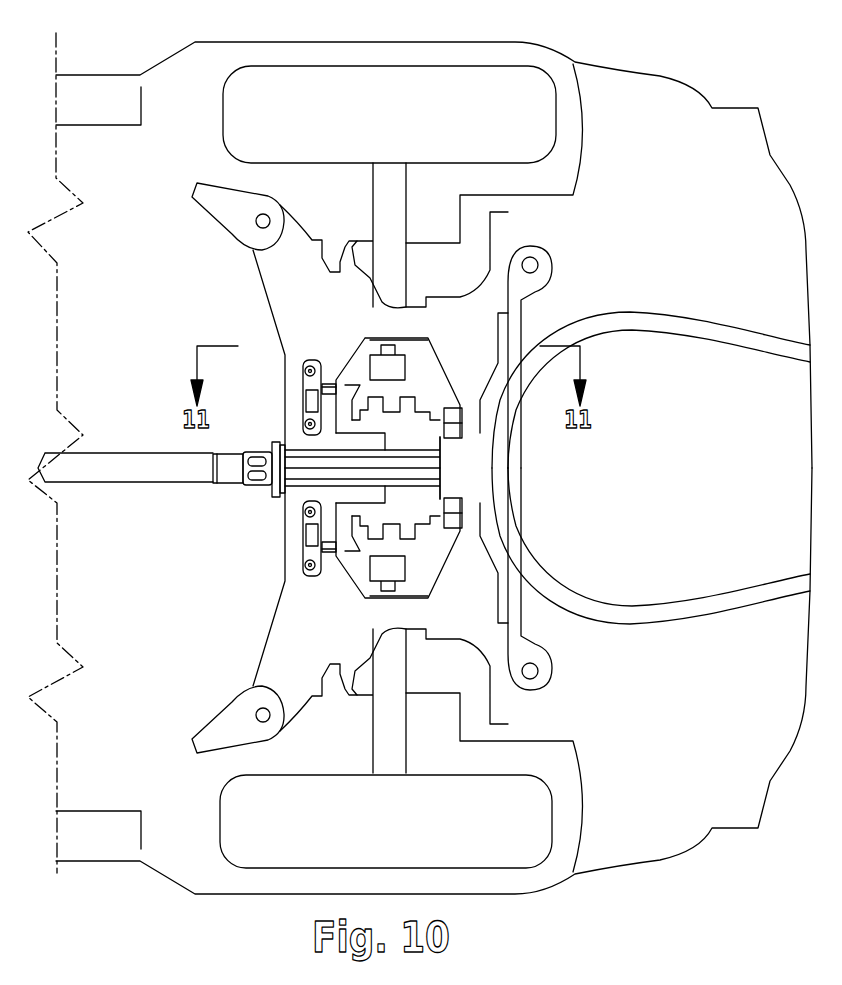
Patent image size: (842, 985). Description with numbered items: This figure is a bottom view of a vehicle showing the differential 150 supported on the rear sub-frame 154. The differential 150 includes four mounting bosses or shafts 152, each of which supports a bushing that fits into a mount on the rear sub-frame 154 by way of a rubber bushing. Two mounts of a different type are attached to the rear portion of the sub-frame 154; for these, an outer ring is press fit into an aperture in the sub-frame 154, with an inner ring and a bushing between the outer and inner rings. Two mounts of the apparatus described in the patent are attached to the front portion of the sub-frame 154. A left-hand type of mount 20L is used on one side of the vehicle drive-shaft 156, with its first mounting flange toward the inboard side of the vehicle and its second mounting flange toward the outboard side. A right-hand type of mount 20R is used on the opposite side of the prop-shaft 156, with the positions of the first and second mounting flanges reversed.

The differential 150 is at (443, 412).
The mounting bosses or shafts 152 is at (322, 392).
The rear sub-frame 154 is at (275, 680).
The vehicle drive-shaft 156 is at (128, 470).
The left-hand type of mount 20L is at (300, 420).
The right-hand type of mount 20R is at (300, 528).